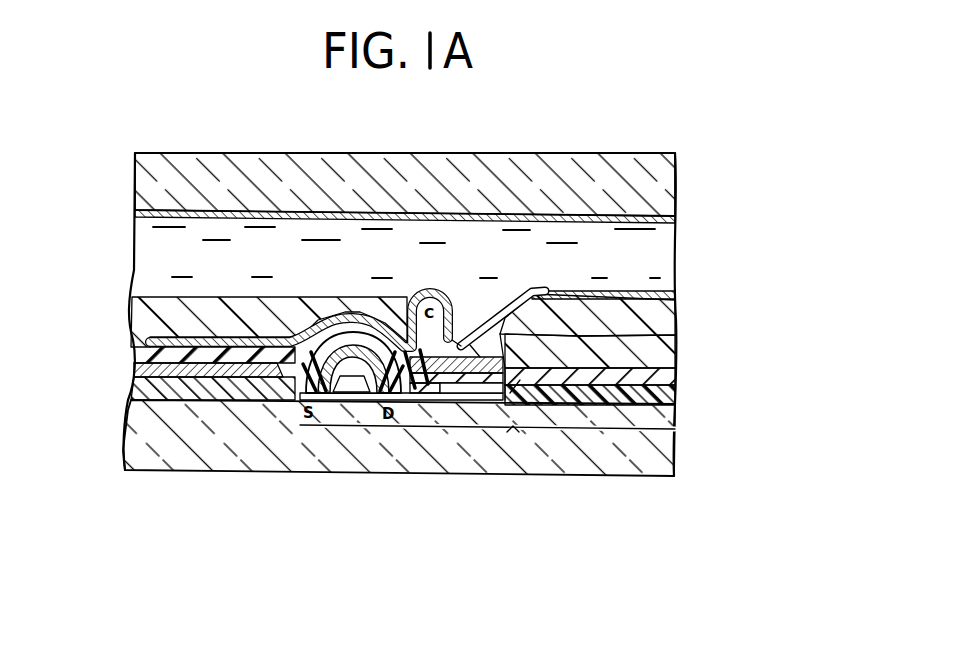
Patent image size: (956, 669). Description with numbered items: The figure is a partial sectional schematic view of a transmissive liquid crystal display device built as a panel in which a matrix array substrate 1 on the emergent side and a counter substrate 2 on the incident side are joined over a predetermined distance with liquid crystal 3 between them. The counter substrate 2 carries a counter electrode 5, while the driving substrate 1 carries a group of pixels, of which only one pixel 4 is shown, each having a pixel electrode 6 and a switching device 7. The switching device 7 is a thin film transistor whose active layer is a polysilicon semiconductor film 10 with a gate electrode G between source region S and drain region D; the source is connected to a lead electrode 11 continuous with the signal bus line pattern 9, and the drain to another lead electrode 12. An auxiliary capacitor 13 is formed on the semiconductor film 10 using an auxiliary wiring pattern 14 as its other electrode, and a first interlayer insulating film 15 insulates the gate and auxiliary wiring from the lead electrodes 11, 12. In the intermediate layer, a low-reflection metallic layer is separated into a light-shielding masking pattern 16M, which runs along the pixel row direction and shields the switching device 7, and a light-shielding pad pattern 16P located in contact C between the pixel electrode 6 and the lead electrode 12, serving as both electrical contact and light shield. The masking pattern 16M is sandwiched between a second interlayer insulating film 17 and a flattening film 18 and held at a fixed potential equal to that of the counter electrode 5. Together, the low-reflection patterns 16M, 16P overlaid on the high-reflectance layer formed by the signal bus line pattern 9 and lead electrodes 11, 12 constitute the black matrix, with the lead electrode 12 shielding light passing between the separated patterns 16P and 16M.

The matrix array substrate 1 is at (668, 452).
The counter substrate 2 is at (180, 177).
The liquid crystal 3 is at (657, 243).
The pixel 4 is at (487, 443).
The counter electrode 5 is at (478, 216).
The pixel electrode 6 is at (533, 288).
The switching device 7 is at (353, 403).
The signal bus line pattern 9 is at (133, 367).
The semiconductor film 10 is at (328, 388).
The lead electrode 11 is at (300, 382).
The lead electrode 12 is at (563, 390).
The auxiliary capacitor 13 is at (472, 403).
The auxiliary wiring pattern 14 is at (510, 390).
The first interlayer insulating film 15 is at (670, 395).
The light-shielding masking pattern 16M is at (207, 333).
The light-shielding pad pattern 16P is at (652, 338).
The second interlayer insulating film 17 is at (670, 375).
The flattening film 18 is at (653, 310).